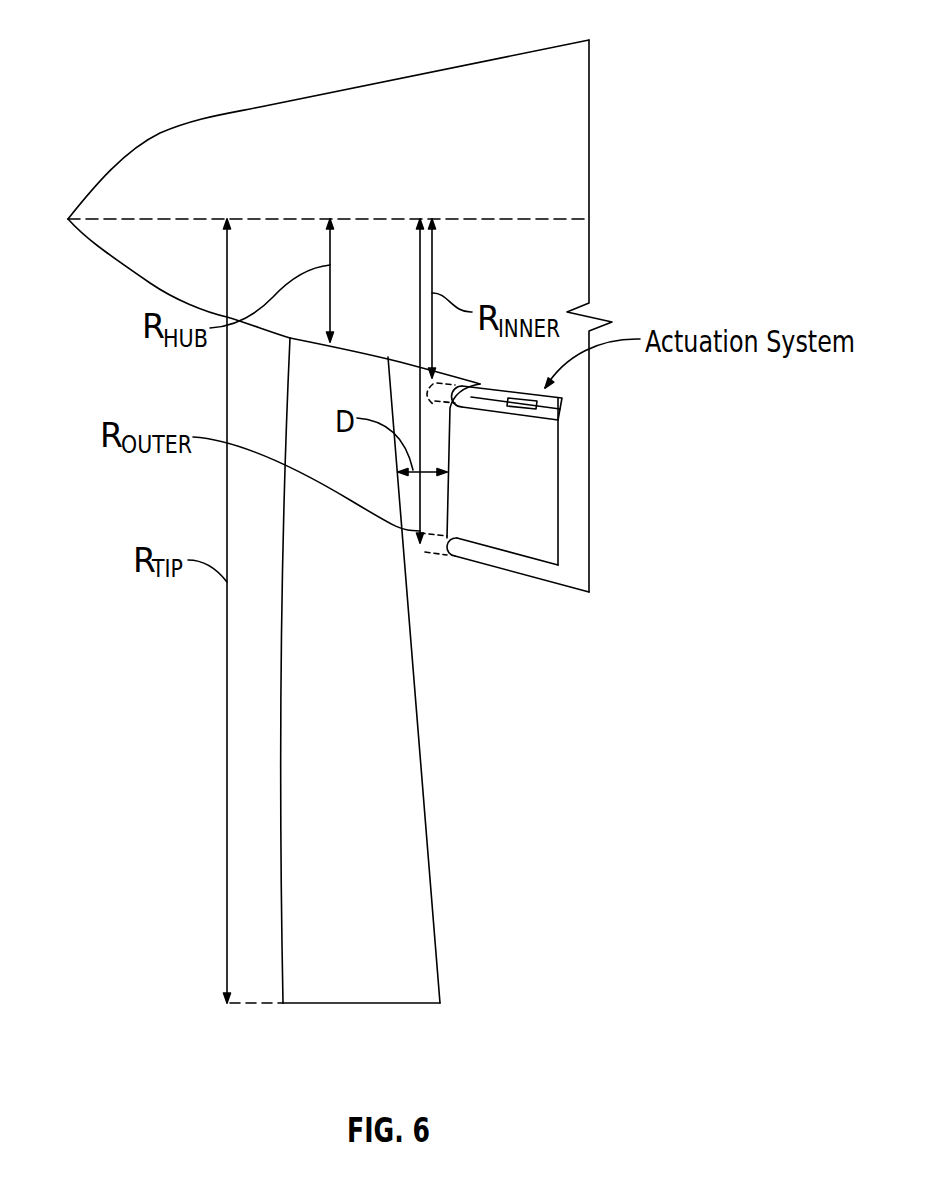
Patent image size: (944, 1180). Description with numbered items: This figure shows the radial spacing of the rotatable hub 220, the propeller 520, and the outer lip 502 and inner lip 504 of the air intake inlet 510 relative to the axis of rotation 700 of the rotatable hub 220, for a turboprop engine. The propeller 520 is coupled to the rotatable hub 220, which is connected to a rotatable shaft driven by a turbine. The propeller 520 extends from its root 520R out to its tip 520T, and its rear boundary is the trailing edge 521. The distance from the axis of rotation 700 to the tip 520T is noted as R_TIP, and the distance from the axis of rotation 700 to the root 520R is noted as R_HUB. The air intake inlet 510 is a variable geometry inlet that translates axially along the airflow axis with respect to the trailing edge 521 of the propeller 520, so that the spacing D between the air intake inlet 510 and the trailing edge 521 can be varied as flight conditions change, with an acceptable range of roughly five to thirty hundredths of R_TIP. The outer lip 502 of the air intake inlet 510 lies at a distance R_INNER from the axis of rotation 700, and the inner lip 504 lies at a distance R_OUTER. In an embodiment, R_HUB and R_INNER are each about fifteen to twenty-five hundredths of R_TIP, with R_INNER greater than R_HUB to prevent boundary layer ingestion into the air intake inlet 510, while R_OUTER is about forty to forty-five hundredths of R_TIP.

The rotatable hub 220 is at (395, 98).
The axis of rotation 700 is at (530, 215).
The root 520R is at (355, 347).
The propeller 520 is at (408, 827).
The trailing edge 521 is at (422, 755).
The tip 520T is at (363, 1004).
The outer lip 502 is at (528, 422).
The air intake inlet 510 is at (568, 518).
The inner lip 504 is at (553, 573).